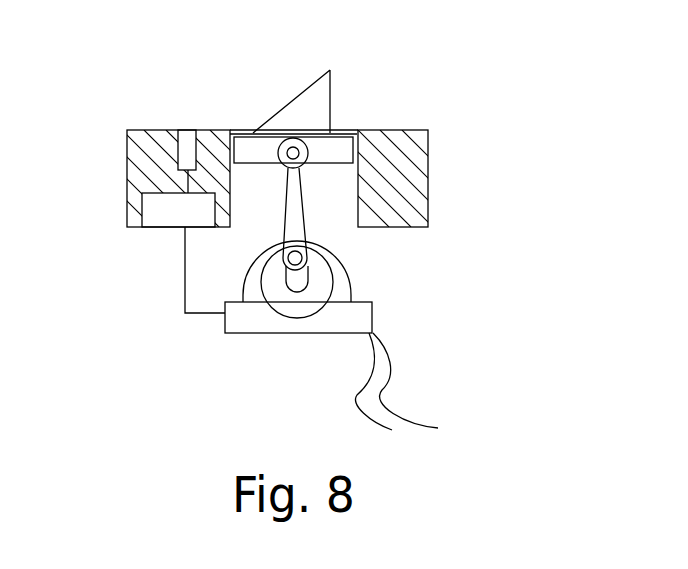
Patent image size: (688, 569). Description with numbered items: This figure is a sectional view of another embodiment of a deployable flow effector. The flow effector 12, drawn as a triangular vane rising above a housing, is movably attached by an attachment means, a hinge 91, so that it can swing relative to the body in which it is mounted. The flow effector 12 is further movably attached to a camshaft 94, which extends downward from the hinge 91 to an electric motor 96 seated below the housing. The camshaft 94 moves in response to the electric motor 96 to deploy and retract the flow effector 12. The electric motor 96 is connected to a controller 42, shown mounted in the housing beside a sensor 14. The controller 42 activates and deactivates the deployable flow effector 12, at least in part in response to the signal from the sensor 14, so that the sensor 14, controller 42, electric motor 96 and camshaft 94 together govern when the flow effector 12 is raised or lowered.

The flow effector 12 is at (312, 108).
The sensor 14 is at (187, 133).
The controller 42 is at (157, 217).
The hinge 91 is at (307, 152).
The camshaft 94 is at (298, 212).
The electric motor 96 is at (265, 322).